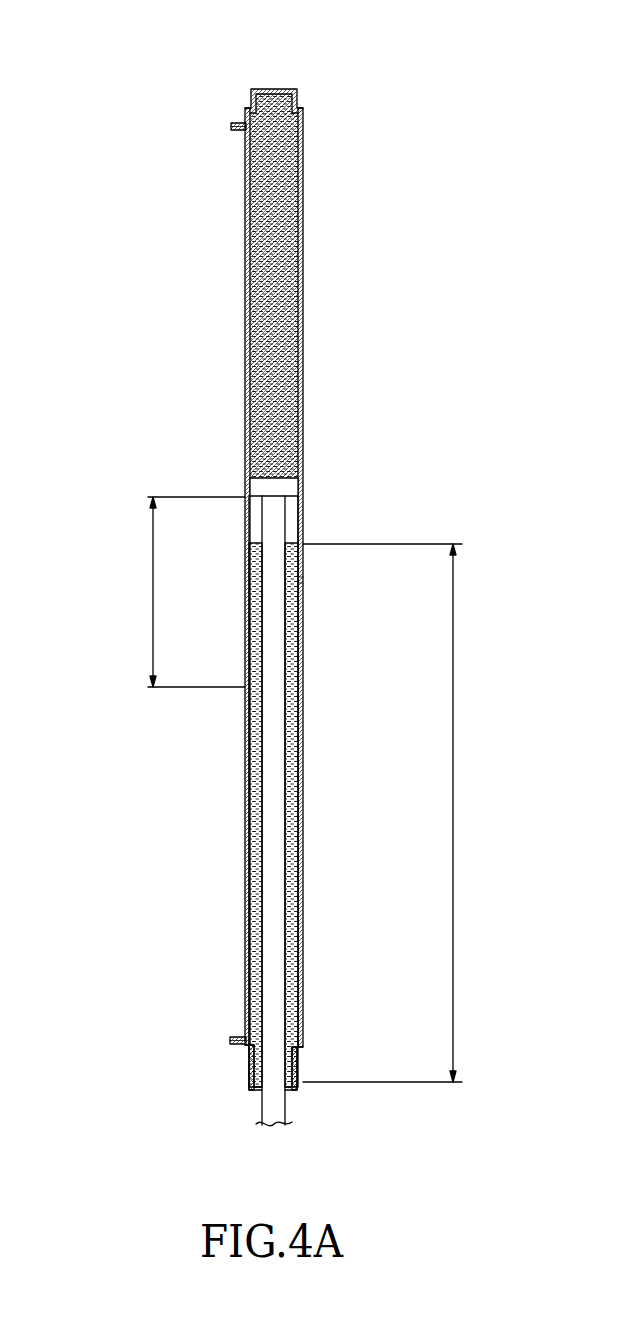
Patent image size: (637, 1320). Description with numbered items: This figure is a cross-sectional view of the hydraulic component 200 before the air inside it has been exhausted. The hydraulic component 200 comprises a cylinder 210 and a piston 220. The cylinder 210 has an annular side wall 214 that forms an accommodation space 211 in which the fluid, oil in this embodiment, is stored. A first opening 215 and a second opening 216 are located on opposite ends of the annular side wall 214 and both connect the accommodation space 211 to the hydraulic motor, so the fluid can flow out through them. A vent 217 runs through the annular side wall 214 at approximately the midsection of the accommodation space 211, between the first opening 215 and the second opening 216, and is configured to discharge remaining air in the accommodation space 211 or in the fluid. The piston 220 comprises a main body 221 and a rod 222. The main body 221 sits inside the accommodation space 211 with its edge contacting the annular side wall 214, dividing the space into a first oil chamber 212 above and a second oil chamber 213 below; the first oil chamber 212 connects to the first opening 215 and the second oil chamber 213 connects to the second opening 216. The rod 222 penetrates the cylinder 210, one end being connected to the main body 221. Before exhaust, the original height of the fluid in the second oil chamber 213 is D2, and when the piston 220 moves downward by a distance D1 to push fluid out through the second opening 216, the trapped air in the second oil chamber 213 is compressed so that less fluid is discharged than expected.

The hydraulic component 200 is at (140, 236).
The cylinder 210 is at (312, 118).
The accommodation space 211 is at (450, 398).
The first oil chamber 212 is at (300, 601).
The second oil chamber 213 is at (290, 458).
The annular side wall 214 is at (303, 270).
The first opening 215 is at (232, 126).
The second opening 216 is at (233, 1040).
The vent 217 is at (295, 585).
The piston 220 is at (290, 1107).
The main body 221 is at (262, 480).
The rod 222 is at (270, 1107).
The distance of piston downward movement D1 is at (181, 592).
The original height of fluid in second oil chamber D2 is at (397, 813).